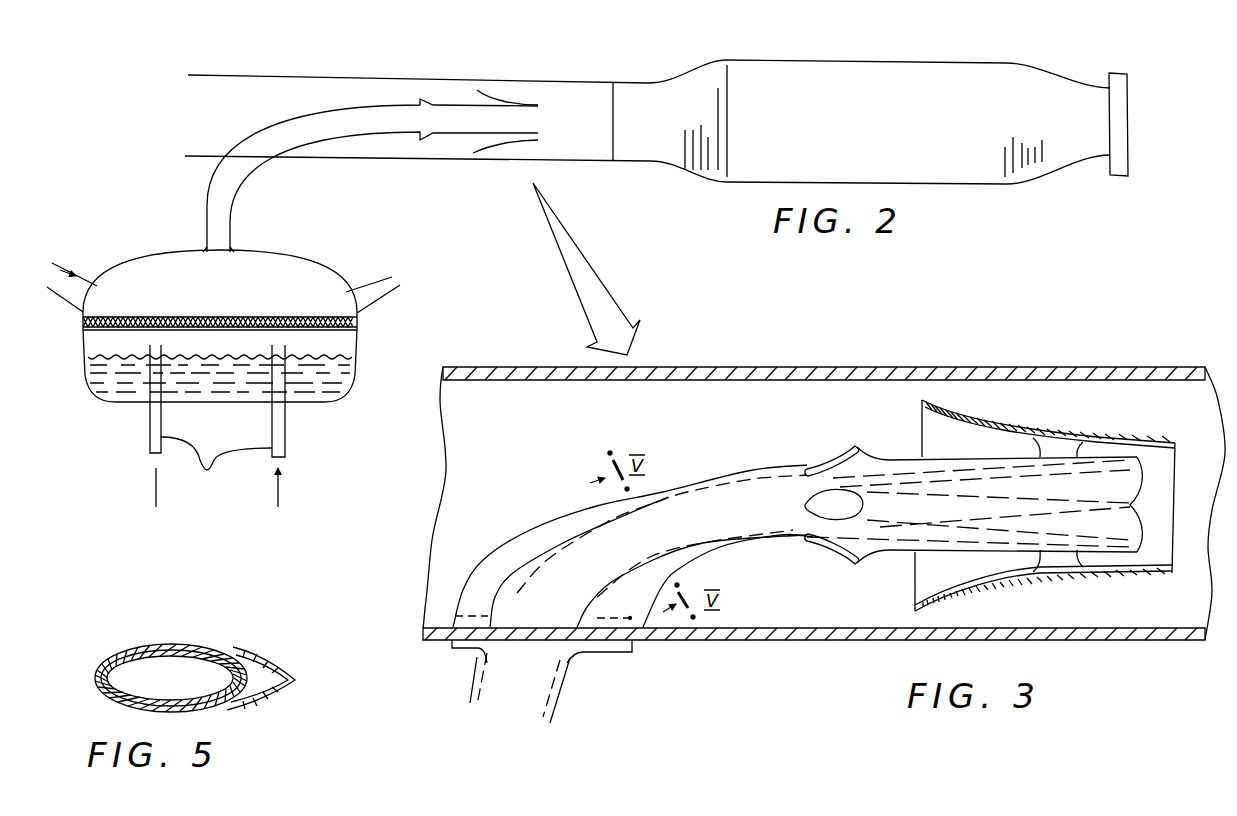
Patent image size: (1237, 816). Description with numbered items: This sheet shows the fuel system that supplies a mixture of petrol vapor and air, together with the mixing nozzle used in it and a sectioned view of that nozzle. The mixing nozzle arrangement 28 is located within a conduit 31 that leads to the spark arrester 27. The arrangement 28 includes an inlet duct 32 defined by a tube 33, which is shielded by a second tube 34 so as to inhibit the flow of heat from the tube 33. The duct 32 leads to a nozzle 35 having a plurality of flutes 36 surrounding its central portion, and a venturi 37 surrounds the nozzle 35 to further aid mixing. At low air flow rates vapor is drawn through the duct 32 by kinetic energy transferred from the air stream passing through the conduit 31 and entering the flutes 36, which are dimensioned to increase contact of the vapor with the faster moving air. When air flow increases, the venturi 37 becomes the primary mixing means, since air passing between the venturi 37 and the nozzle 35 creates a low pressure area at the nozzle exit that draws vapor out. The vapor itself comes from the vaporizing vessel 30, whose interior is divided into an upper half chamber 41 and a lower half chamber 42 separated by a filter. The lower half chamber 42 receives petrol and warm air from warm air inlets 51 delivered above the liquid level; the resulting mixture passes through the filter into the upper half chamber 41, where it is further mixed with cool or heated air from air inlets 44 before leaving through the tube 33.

In FIG. 2, the spark arrester 27 is at (888, 122).
In FIG. 2, the mixing nozzle arrangement 28 is at (433, 165).
In FIG. 3, the mixing nozzle arrangement 28 is at (920, 360).
In FIG. 2, the vaporizing vessel 30 is at (293, 261).
In FIG. 2, the conduit 31 is at (380, 160).
In FIG. 3, the conduit 31 is at (1033, 370).
In FIG. 2, the inlet duct 32 is at (384, 180).
In FIG. 3, the inlet duct 32 is at (695, 564).
In FIG. 5, the inlet duct 32 is at (170, 678).
In FIG. 2, the tube 33 is at (305, 125).
In FIG. 3, the tube 33 is at (650, 503).
In FIG. 5, the tube 33 is at (247, 663).
In FIG. 5, the second tube 34 is at (263, 697).
In FIG. 2, the nozzle 35 is at (473, 121).
In FIG. 3, the nozzle 35 is at (888, 460).
In FIG. 3, the flutes 36 is at (832, 470).
In FIG. 2, the venturi 37 is at (515, 145).
In FIG. 3, the venturi 37 is at (1030, 431).
In FIG. 2, the upper half chamber 41 is at (203, 281).
In FIG. 2, the lower half chamber 42 is at (220, 360).
In FIG. 2, the air inlets 44 is at (80, 288).
In FIG. 2, the warm air inlets 51 is at (217, 426).